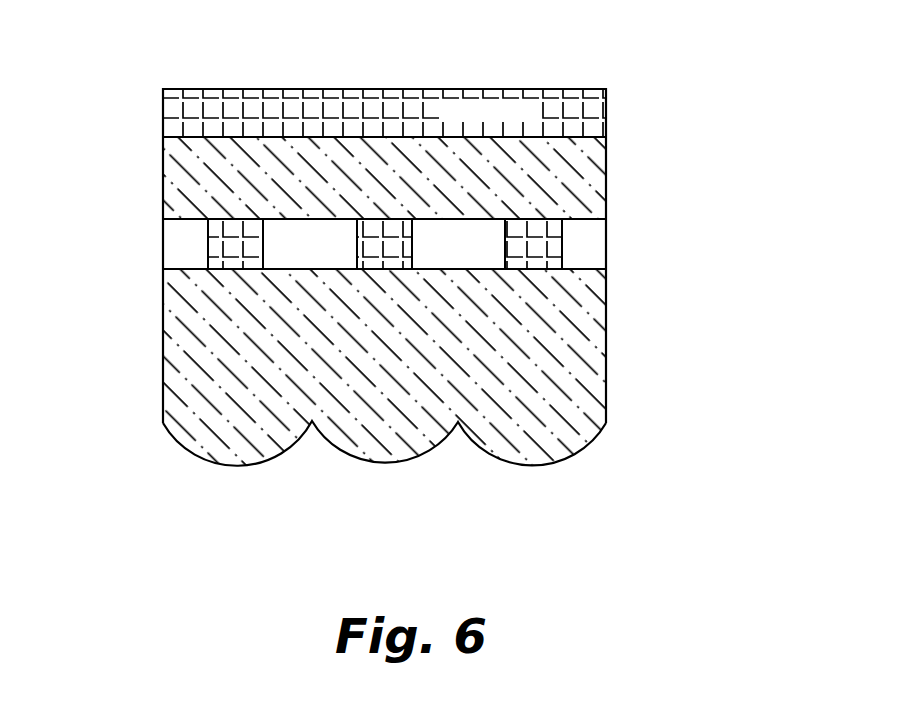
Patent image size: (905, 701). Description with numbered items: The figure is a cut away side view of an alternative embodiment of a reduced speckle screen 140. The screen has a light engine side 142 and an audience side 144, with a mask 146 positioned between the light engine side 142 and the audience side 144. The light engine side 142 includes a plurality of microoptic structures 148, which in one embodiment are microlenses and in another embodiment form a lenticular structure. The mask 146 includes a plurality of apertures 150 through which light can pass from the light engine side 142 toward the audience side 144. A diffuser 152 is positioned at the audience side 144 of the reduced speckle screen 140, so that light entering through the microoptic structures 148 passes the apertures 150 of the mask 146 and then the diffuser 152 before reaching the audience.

The audience side 144 is at (450, 72).
The diffuser 152 is at (606, 105).
The reduced speckle screen 140 is at (606, 165).
The mask 146 is at (163, 221).
The apertures 150 is at (558, 242).
The light engine side 142 is at (442, 521).
The microoptic structures 148 is at (220, 463).